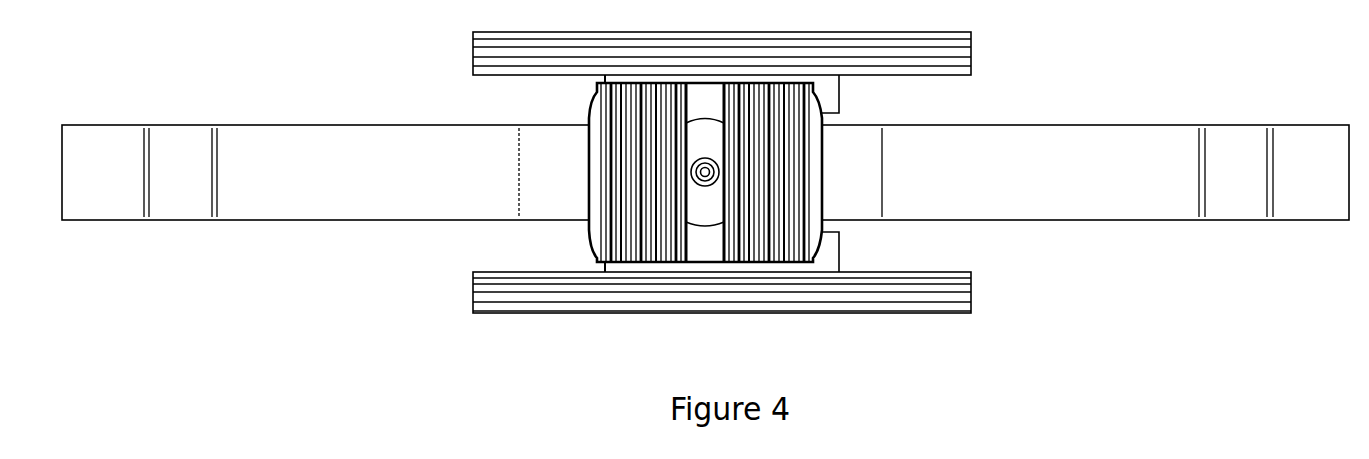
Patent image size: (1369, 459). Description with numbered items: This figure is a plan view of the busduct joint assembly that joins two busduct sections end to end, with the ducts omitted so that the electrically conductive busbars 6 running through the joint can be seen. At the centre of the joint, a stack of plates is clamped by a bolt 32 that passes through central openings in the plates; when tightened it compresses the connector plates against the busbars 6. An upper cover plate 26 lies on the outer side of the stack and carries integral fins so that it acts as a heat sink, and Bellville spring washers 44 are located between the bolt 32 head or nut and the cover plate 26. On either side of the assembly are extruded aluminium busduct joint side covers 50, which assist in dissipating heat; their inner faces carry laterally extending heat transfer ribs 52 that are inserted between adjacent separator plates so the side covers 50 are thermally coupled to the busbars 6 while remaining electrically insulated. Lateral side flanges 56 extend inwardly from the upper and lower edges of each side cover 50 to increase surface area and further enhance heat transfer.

The busbar 6 is at (1131, 152).
The busduct joint side cover 50 is at (558, 316).
The lateral side flange 56 is at (957, 289).
The Bellville spring washer 44 is at (714, 204).
The upper cover plate 26 is at (708, 243).
The bolt 32 is at (693, 185).
The heat transfer rib 52 is at (834, 258).